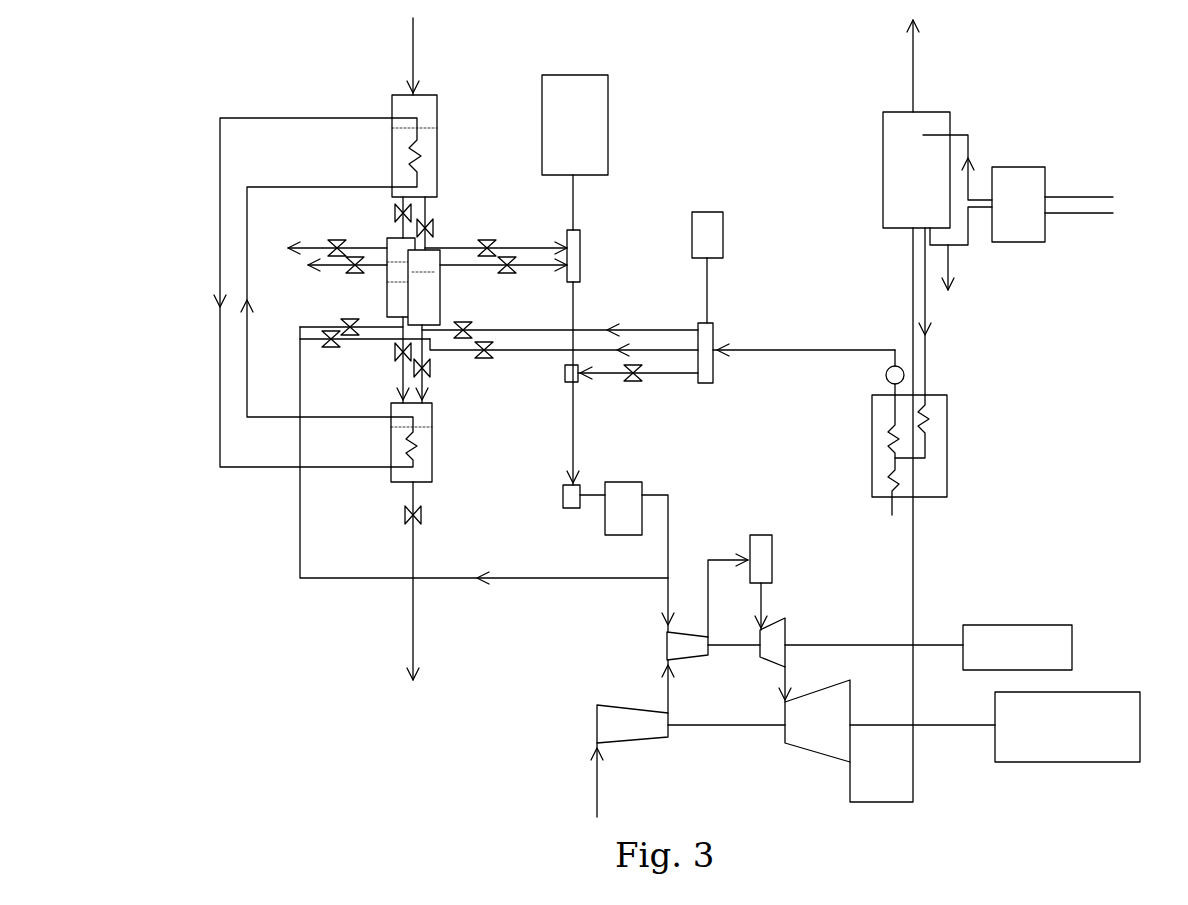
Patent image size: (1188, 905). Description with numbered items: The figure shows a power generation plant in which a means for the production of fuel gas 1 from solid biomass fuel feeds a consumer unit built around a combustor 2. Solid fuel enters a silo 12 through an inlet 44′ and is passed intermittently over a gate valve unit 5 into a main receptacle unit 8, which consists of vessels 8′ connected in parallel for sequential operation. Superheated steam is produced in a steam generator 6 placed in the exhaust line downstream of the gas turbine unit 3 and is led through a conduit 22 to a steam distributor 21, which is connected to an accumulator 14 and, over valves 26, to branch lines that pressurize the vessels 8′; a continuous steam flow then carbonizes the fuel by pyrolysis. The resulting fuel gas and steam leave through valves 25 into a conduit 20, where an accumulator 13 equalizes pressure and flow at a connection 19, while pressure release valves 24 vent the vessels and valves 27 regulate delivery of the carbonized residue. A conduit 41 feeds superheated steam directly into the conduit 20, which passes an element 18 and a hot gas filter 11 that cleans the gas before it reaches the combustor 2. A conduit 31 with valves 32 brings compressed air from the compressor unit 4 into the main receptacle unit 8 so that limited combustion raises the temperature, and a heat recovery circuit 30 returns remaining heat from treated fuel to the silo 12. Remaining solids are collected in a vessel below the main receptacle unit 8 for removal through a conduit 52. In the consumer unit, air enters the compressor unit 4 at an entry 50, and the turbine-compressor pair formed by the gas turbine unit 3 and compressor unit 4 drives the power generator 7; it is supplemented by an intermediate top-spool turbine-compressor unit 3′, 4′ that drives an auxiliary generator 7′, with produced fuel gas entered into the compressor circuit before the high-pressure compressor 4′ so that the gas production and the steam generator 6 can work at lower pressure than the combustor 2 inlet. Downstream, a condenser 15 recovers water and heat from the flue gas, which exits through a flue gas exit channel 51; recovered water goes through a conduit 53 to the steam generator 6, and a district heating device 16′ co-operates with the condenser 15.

The means for the production of fuel gas 1 is at (197, 349).
The combustor 2 is at (774, 564).
The gas turbine unit 3 is at (820, 762).
The intermediate turbine 3′ is at (790, 632).
The compressor unit 4 is at (630, 745).
The intermediate compressor 4′ is at (665, 640).
The gate valve unit 5 is at (437, 224).
The steam generator 6 is at (948, 437).
The power generator 7 is at (1055, 764).
The auxiliary generator 7′ is at (1043, 623).
The main receptacle unit 8 is at (452, 298).
The vessel 8′ is at (387, 290).
The hot gas filter 11 is at (622, 481).
The silo 12 is at (438, 156).
The accumulator 13 is at (570, 74).
The accumulator 14 is at (708, 212).
The condenser 15 is at (880, 160).
The district heating device 16′ is at (1008, 250).
The sensor 18 is at (562, 500).
The connection 19 is at (582, 265).
The conduit 20 is at (578, 308).
The steam distributor 21 is at (714, 338).
The conduit 22 is at (800, 347).
The pressure release valves 24 is at (357, 258).
The valves 25 is at (507, 258).
The valves 26 is at (465, 343).
The valves 27 is at (397, 356).
The heat recovery circuit 30 is at (252, 470).
The air feed conduit 31 is at (330, 579).
The valves 32 is at (330, 336).
The conduit 41 is at (655, 380).
The cooling medium inlet 44′ is at (408, 57).
The air entry 50 is at (592, 782).
The flue gas exit channel 51 is at (920, 80).
The conduit 52 is at (405, 620).
The conduit 53 is at (930, 352).